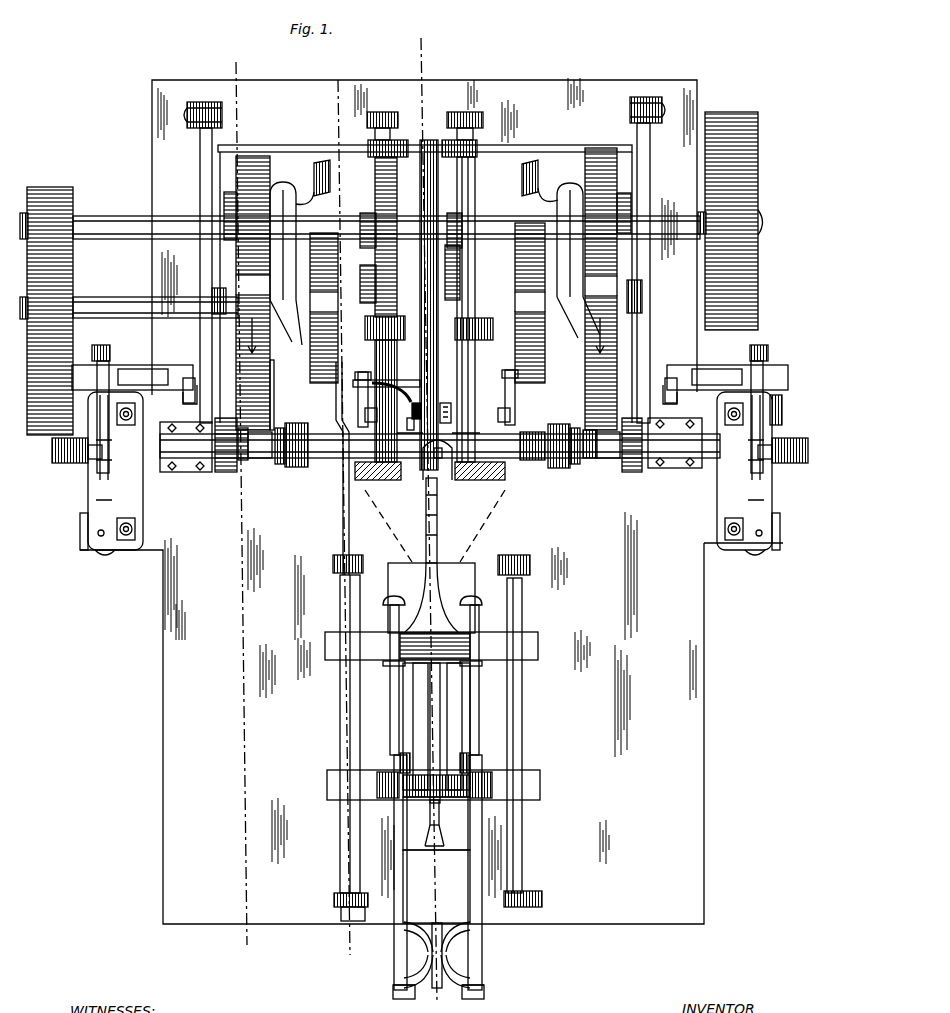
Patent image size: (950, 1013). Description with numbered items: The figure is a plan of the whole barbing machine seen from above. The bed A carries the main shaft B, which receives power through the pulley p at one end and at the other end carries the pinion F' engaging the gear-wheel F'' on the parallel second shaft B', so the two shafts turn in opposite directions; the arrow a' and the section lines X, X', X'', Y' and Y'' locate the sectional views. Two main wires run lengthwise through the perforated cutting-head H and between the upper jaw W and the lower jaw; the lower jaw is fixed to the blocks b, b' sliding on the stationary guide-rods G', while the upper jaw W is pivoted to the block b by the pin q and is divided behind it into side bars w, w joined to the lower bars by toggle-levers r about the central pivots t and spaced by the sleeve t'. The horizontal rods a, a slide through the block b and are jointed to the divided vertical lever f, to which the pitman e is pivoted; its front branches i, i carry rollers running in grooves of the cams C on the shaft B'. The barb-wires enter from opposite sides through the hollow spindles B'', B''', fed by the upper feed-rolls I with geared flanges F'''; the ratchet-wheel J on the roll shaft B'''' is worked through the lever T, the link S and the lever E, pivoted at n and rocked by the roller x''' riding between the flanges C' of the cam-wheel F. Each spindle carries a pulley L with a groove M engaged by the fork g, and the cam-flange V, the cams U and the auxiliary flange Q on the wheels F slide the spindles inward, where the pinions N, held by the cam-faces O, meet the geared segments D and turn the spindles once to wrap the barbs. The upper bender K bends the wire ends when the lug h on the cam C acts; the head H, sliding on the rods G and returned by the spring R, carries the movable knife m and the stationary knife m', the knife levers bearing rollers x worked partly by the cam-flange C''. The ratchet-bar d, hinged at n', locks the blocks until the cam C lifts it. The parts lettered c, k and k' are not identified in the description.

The bed A is at (431, 501).
The main shaft B is at (386, 217).
The second shaft B' is at (155, 297).
The barb-forming spindle B'' is at (440, 457).
The barb-forming spindle B''' is at (542, 464).
The feed-roll shaft B'''' is at (436, 564).
The cam C is at (427, 303).
The parallel flanges C' is at (425, 206).
The cam-flange C'' is at (426, 274).
The geared segment D is at (618, 150).
The vertically-reciprocating lever E is at (203, 216).
The cam-wheel F is at (253, 293).
The pinion F' is at (322, 291).
The gear-wheel F'' is at (56, 247).
The geared flange F''' is at (440, 465).
The guide-rod G is at (422, 305).
The guide-rod G' is at (438, 734).
The cutting-head H is at (392, 389).
The upper feed-roll I is at (52, 452).
The ratchet-wheel J is at (790, 354).
The upper bender K is at (110, 500).
The pulley L is at (296, 424).
The annular groove M is at (294, 468).
The pinion N is at (226, 473).
The cam-face O is at (600, 457).
The auxiliary flange Q is at (524, 186).
The spring R is at (380, 194).
The link S is at (183, 393).
The lever T is at (148, 365).
The cam U is at (782, 404).
The cam-flange V is at (435, 263).
The upper jaw W is at (433, 581).
The section line X is at (420, 508).
The section line X' is at (234, 495).
The section line X'' is at (338, 507).
The section line Y' is at (248, 958).
The section line Y'' is at (348, 990).
The horizontal rod a is at (490, 524).
The arrow a' is at (288, 60).
The block b is at (431, 646).
The block b' is at (433, 785).
The screw cap c is at (331, 898).
The ratchet-bar d is at (343, 531).
The pitman e is at (472, 520).
The vertical lever f is at (460, 995).
The semi-annular fork g is at (427, 429).
The lug h is at (286, 395).
The divergent branch i is at (357, 400).
The stud k is at (406, 431).
The stud k' is at (438, 456).
The movable knife m is at (448, 422).
The stationary knife m' is at (423, 422).
The pivot n is at (424, 104).
The hinge n' is at (353, 926).
The pulley p is at (752, 147).
The pin q is at (437, 700).
The toggle-lever r is at (447, 769).
The central pivot t is at (434, 762).
The sleeve t' is at (436, 860).
The side bar w is at (436, 726).
The anti-friction roller x is at (420, 239).
The anti-friction roller x''' is at (430, 288).